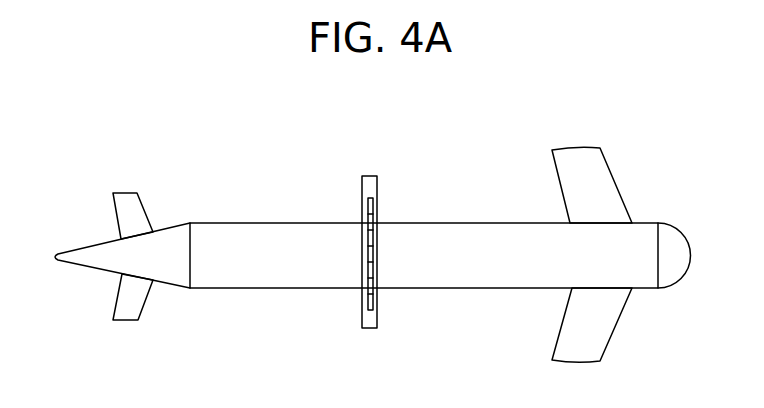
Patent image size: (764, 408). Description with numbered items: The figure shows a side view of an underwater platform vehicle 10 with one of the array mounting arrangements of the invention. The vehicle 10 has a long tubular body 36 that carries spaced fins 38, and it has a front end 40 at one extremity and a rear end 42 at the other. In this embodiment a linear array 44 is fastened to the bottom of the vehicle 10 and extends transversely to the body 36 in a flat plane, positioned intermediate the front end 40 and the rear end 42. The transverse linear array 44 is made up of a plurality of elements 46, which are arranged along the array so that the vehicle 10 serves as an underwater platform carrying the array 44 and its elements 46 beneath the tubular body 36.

The underwater vehicle 10 is at (448, 220).
The tubular body 36 is at (250, 238).
The spaced fins 38 is at (578, 197).
The front end 40 is at (680, 253).
The rear end 42 is at (88, 257).
The linear array 44 is at (370, 305).
The elements 46 is at (368, 202).